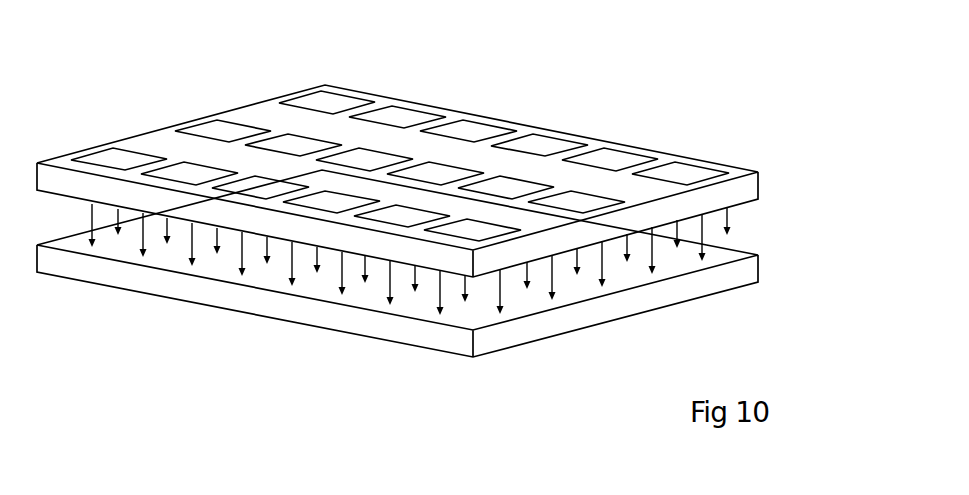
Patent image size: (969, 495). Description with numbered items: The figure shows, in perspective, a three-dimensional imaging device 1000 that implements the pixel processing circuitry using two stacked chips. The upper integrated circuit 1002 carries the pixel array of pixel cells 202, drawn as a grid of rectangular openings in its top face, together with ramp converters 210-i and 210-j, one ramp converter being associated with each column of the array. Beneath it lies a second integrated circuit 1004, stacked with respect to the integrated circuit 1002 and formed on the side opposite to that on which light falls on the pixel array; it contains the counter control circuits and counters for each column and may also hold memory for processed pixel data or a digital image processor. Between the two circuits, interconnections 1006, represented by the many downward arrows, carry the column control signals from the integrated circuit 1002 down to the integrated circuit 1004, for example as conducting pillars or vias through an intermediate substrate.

The three-dimensional imaging device 1000 is at (641, 91).
The integrated circuit 1002 is at (767, 172).
The integrated circuit 1004 is at (767, 255).
The interconnections 1006 is at (732, 221).
The pixel cells 202 is at (102, 157).
The ramp converter 210-i is at (167, 141).
The ramp converter 210-j is at (259, 114).